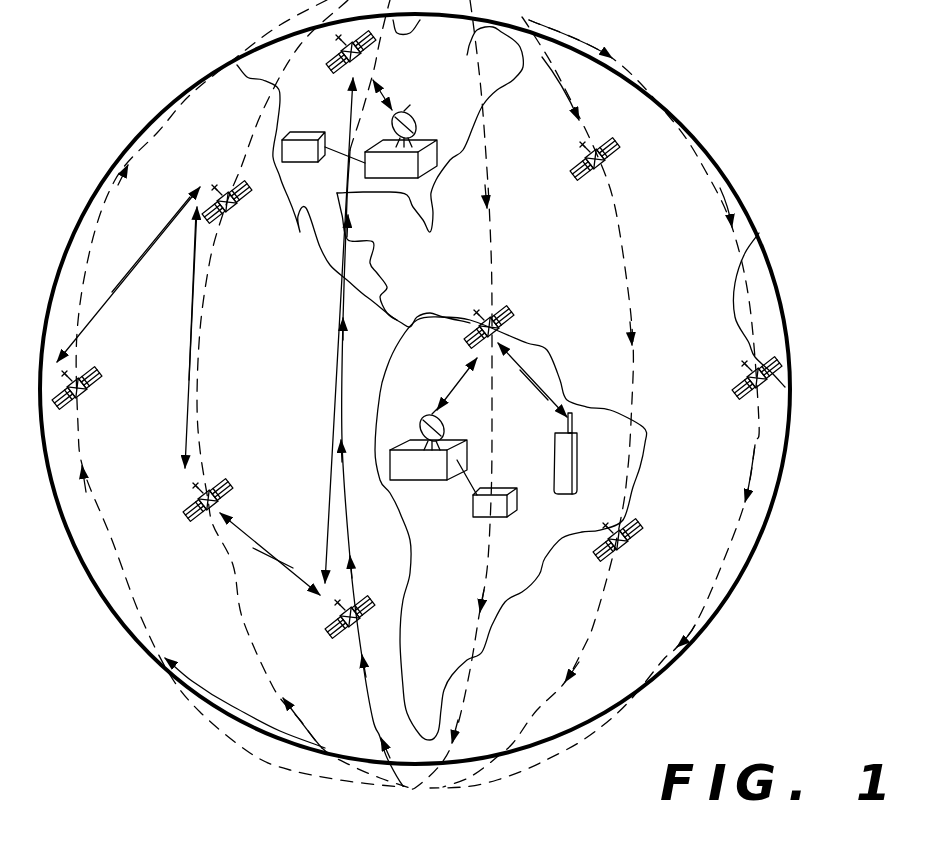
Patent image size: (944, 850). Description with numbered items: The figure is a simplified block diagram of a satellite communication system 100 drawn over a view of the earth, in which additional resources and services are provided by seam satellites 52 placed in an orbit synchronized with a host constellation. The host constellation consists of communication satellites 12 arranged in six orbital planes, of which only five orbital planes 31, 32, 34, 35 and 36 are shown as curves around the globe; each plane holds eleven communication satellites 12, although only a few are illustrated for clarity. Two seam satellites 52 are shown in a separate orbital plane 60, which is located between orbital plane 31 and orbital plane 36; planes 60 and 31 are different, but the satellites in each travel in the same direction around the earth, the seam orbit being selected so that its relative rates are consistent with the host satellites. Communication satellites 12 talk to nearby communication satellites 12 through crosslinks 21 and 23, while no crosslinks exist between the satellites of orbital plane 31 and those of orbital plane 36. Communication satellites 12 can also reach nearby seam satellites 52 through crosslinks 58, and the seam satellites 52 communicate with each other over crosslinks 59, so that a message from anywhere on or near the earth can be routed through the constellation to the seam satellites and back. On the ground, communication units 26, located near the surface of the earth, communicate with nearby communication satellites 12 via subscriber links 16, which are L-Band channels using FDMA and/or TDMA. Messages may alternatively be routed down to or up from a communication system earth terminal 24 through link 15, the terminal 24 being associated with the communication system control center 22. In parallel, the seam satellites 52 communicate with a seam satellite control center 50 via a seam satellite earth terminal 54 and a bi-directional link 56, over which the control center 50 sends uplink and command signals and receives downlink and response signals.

The satellite communication system 100 is at (803, 671).
The communication satellite 12 is at (230, 212).
The link 15 is at (460, 382).
The subscriber link 16 is at (535, 378).
The crosslink 21 is at (187, 410).
The communication system control center 22 is at (513, 508).
The crosslink 23 is at (140, 262).
The communication system earth terminal 24 is at (427, 473).
The communication unit 26 is at (578, 445).
The orbital plane 31 is at (263, 113).
The orbital plane 32 is at (128, 594).
The orbital plane 34 is at (740, 192).
The orbital plane 35 is at (616, 210).
The orbital plane 36 is at (488, 177).
The seam satellite control center 50 is at (306, 163).
The seam satellite 52 is at (335, 66).
The seam satellite earth terminal 54 is at (424, 140).
The link 56 is at (380, 87).
The crosslink 58 is at (253, 542).
The crosslink 59 is at (331, 446).
The orbital plane 60 is at (347, 497).